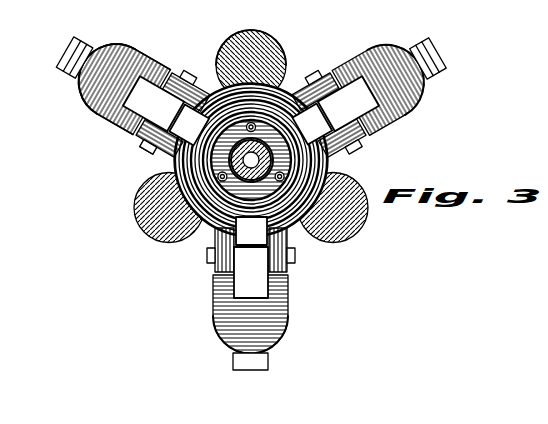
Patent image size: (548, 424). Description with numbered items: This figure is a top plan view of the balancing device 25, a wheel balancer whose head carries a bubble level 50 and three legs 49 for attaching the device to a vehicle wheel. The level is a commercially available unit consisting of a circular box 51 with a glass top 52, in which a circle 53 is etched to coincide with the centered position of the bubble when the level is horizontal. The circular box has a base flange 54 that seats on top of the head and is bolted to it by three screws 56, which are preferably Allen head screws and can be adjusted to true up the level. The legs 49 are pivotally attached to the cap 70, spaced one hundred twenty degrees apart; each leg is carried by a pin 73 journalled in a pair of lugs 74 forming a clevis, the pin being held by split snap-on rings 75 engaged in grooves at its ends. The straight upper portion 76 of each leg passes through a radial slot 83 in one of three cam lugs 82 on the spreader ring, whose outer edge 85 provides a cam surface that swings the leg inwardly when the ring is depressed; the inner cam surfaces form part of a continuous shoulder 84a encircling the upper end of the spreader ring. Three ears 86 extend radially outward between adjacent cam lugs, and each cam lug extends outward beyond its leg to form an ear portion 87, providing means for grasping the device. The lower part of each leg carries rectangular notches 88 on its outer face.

The balancing device 25 is at (232, 40).
The legs 49 is at (72, 72).
The bubble level 50 is at (222, 172).
The circular box 51 is at (222, 157).
The glass top 52 is at (210, 236).
The circle 53 is at (250, 123).
The base flange 54 is at (290, 165).
The screws 56 is at (292, 88).
The cap 70 is at (300, 238).
The pin 73 is at (198, 70).
The lugs 74 is at (228, 262).
The split snap-on rings 75 is at (150, 138).
The straight upper portion 76 is at (152, 92).
The cam lugs 82 is at (115, 122).
The radial slot 83 is at (288, 308).
The continuous shoulder 84a is at (215, 162).
The outer edge 85 is at (240, 300).
The ears 86 is at (277, 36).
The ear portion 87 is at (136, 48).
The rectangular notches 88 is at (437, 52).